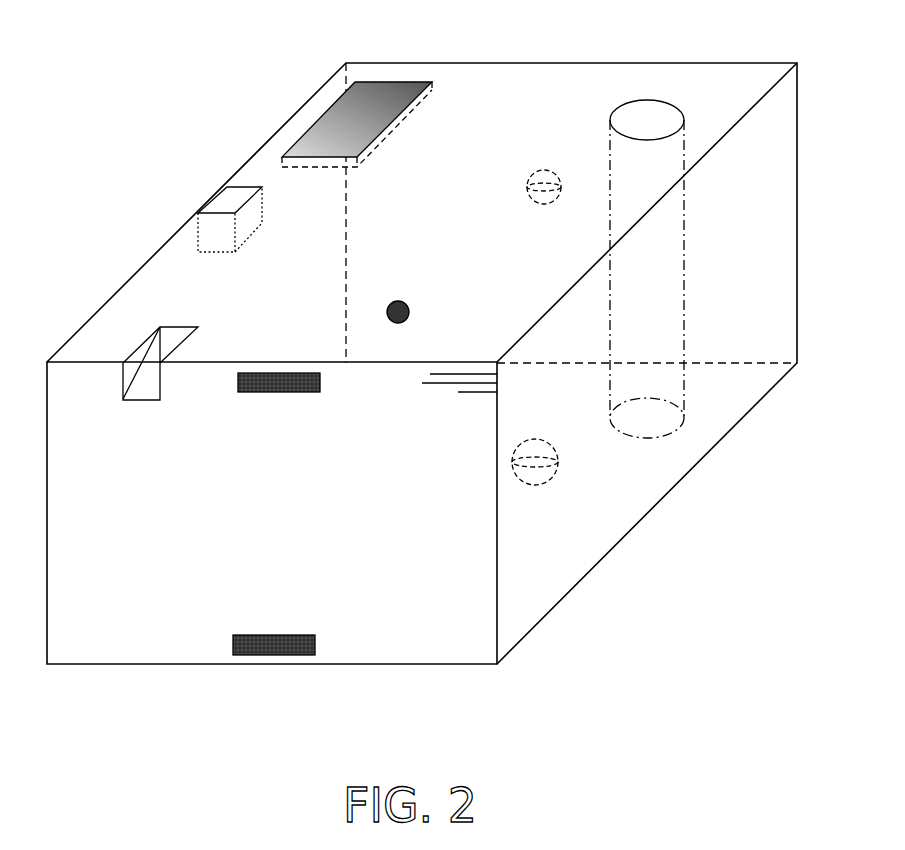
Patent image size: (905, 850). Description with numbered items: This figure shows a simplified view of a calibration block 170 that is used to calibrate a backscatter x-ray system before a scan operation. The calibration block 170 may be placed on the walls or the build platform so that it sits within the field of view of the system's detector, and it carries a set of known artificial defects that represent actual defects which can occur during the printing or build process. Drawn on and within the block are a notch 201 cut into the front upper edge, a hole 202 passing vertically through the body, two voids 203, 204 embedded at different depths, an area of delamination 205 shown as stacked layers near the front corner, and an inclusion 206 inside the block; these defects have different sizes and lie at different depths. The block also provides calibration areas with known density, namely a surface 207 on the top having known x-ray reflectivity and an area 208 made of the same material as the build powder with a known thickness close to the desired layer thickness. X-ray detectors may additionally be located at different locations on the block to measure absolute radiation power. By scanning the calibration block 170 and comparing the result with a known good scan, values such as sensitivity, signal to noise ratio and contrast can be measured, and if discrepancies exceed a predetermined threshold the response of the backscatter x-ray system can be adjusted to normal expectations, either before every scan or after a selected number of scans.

The calibration block 170 is at (134, 634).
The notch 201 is at (150, 392).
The hole 202 is at (686, 252).
The void 203 is at (538, 205).
The void 204 is at (535, 487).
The area of delamination 205 is at (442, 387).
The inclusion 206 is at (387, 303).
The surface 207 is at (387, 90).
The area 208 is at (230, 203).